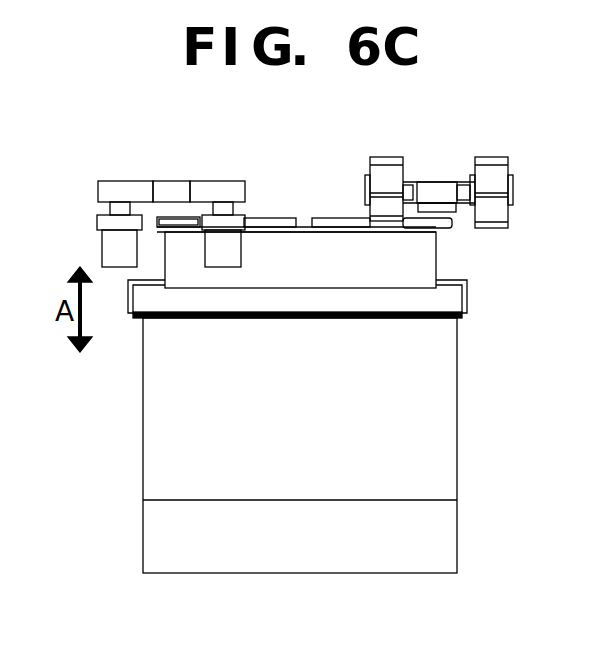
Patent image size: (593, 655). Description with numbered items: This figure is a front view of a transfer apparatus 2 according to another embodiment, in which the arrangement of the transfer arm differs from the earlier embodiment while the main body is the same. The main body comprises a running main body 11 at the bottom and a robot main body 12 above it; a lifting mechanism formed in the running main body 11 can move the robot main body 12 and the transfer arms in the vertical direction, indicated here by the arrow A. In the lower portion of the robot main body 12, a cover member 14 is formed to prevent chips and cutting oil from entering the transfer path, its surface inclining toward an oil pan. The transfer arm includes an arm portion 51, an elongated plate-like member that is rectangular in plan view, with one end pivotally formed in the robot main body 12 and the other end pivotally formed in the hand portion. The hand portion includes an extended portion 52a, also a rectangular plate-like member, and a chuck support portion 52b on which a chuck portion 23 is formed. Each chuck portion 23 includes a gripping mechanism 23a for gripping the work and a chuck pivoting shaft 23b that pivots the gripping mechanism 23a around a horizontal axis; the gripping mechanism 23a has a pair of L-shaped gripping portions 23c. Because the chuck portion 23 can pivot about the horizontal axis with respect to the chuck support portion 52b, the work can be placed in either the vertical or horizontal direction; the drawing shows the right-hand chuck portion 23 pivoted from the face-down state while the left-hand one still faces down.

The transfer apparatus 2 is at (253, 135).
The running main body 11 is at (180, 492).
The robot main body 12 is at (305, 252).
The cover member 14 is at (153, 297).
The chuck portion 23 is at (75, 148).
The gripping mechanism 23a is at (163, 218).
The chuck pivoting shaft 23b is at (106, 200).
The gripping portion 23c is at (215, 250).
The arm portion 51 is at (271, 215).
The extended portion 52a is at (183, 189).
The chuck support portion 52b is at (172, 187).